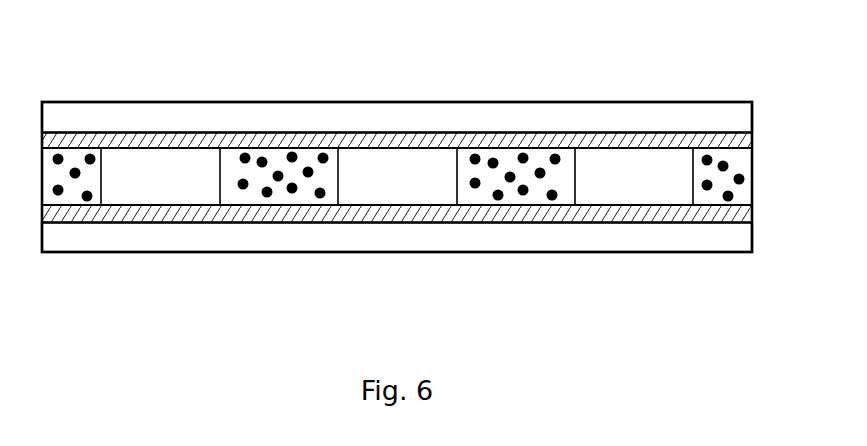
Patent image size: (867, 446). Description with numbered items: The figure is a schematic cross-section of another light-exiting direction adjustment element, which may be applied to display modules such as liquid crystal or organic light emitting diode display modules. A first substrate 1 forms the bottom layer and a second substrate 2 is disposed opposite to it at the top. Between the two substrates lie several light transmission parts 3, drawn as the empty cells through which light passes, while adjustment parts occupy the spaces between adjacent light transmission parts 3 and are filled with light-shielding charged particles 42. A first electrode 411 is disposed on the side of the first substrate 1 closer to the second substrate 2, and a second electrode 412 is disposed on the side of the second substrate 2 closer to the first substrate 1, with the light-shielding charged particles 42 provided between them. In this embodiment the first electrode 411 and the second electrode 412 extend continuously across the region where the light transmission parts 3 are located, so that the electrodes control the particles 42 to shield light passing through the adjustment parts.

The first substrate 1 is at (124, 238).
The second substrate 2 is at (124, 115).
The light transmission part 3 is at (178, 200).
The first electrode 411 is at (299, 212).
The second electrode 412 is at (247, 137).
The light-shielding charged particles 42 is at (308, 172).